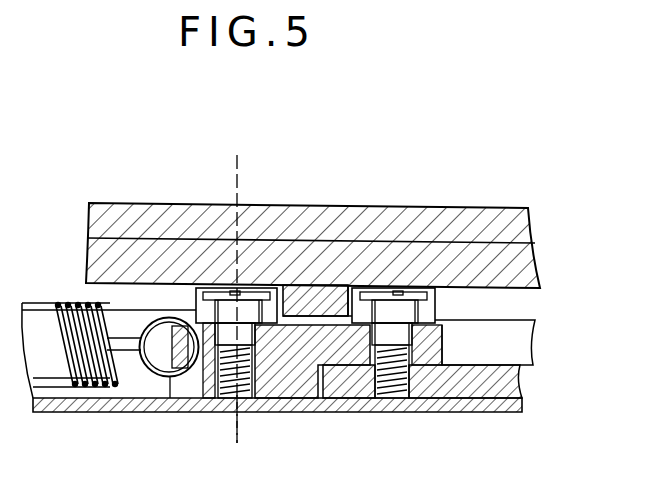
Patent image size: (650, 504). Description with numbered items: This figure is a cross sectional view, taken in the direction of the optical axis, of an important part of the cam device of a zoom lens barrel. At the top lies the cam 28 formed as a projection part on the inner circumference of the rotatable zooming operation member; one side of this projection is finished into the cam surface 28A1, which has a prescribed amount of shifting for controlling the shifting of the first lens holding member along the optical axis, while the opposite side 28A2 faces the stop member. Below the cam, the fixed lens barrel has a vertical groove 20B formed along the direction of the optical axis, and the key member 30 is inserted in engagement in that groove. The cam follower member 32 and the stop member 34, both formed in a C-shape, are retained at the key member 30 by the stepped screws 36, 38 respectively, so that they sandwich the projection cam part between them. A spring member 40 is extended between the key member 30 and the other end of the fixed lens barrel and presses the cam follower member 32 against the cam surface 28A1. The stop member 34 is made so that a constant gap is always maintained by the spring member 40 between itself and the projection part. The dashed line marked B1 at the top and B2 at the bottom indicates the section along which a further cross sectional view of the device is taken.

The cam 28 is at (445, 258).
The cam surface 28A1 is at (343, 296).
The projection part side 28A2 is at (293, 292).
The cam follower member 32 is at (360, 293).
The stop member 34 is at (197, 313).
The stepped screw 36 is at (390, 413).
The stepped screw 38 is at (242, 387).
The spring member 40 is at (58, 306).
The vertical groove 20B is at (510, 350).
The key member 30 is at (505, 398).
The section line end B1 is at (242, 283).
The section line end B2 is at (219, 435).